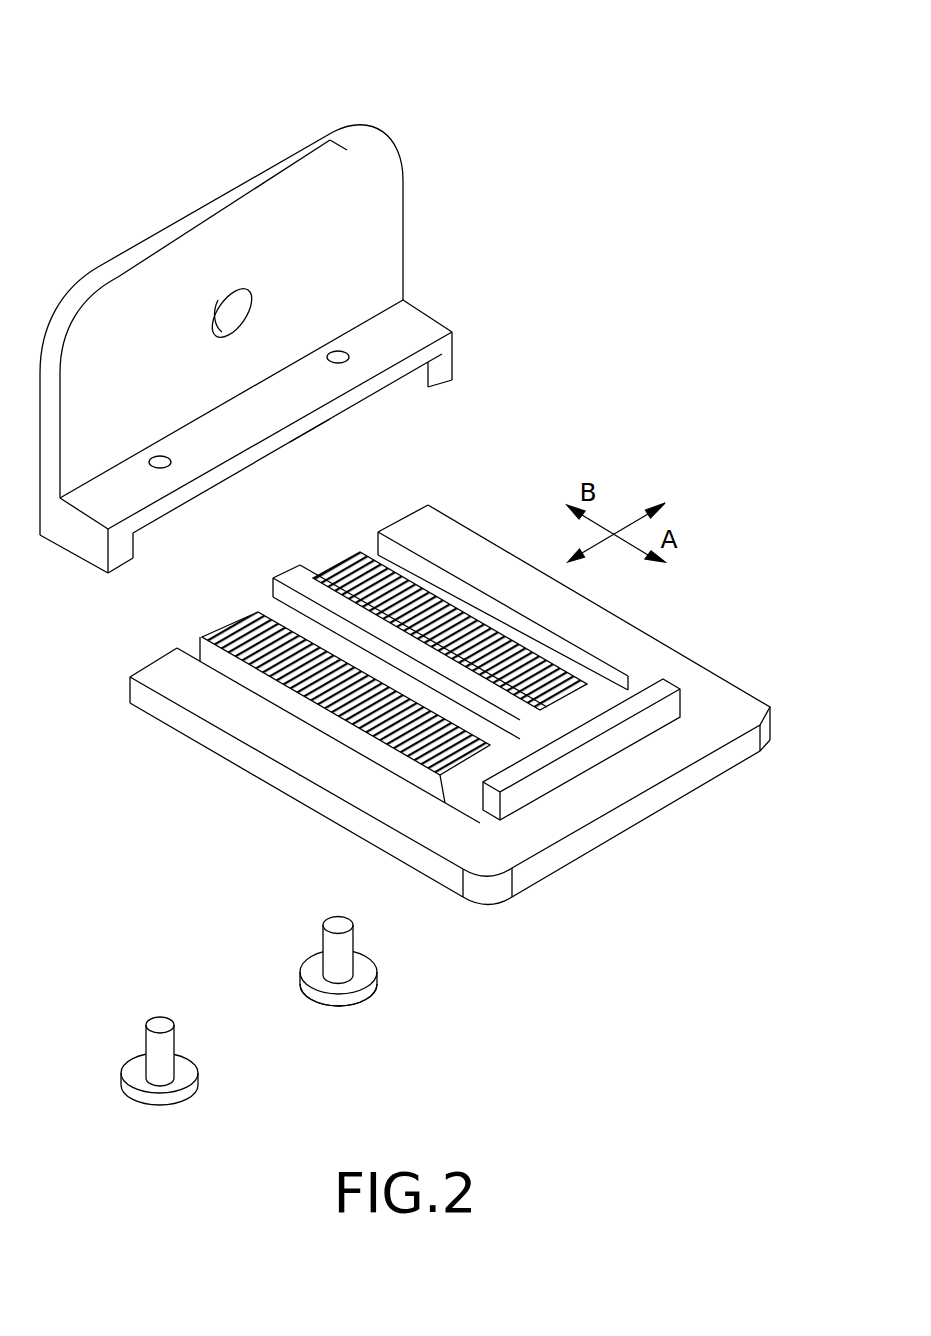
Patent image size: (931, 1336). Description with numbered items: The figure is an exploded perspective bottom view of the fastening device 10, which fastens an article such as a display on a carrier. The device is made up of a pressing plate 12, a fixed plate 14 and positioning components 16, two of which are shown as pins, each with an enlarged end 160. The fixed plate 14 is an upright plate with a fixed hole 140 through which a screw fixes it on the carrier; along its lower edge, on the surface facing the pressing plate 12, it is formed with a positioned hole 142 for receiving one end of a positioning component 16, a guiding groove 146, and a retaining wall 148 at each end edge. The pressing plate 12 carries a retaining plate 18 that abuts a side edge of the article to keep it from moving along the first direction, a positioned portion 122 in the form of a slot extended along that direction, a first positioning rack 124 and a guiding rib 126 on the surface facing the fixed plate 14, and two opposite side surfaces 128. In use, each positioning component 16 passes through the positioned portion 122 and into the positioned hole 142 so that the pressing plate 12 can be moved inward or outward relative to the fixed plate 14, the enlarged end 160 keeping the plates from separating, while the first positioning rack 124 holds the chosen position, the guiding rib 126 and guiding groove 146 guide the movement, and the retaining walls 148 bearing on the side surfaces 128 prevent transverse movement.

The fastening device 10 is at (346, 73).
The pressing plate 12 is at (764, 687).
The fixed plate 14 is at (416, 206).
The positioning component 16 is at (316, 942).
The retaining plate 18 is at (682, 690).
The positioned portion 122 is at (372, 530).
The first positioning rack 124 is at (338, 562).
The guiding rib 126 is at (297, 580).
The side surface 128 is at (322, 798).
The fixed hole 140 is at (220, 307).
The positioned hole 142 is at (345, 363).
The guiding groove 146 is at (300, 440).
The retaining wall 148 is at (452, 380).
The enlarged end 160 is at (360, 980).